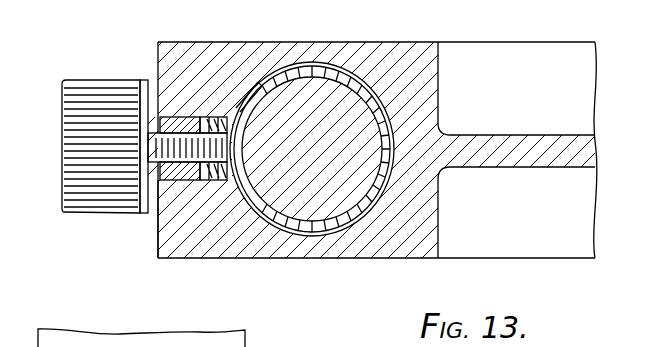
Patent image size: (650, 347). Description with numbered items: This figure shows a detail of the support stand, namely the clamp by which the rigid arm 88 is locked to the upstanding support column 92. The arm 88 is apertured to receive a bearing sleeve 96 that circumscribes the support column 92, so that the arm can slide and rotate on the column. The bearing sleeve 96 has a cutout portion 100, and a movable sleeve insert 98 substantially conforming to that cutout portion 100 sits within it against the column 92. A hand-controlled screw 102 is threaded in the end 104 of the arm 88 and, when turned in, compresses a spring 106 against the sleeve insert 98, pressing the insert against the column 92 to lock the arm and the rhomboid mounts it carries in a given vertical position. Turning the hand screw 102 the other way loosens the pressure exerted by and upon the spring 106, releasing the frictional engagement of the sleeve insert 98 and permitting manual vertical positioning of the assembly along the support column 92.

The rigid arm 88 is at (532, 95).
The support column 92 is at (313, 213).
The bearing sleeve 96 is at (328, 72).
The sleeve insert 98 is at (228, 120).
The cutout portion 100 is at (250, 92).
The hand-controlled screw 102 is at (152, 132).
The end of the arm 104 is at (161, 229).
The spring 106 is at (205, 125).